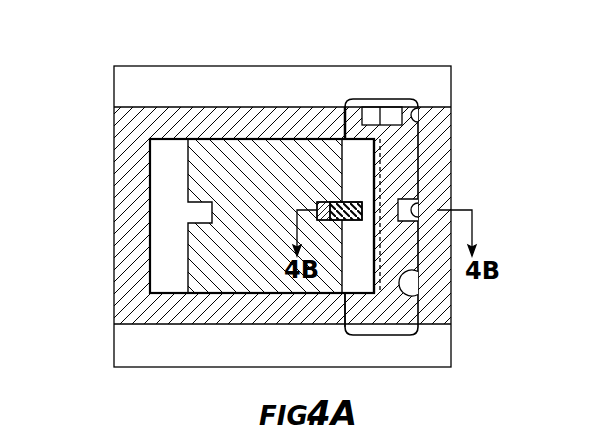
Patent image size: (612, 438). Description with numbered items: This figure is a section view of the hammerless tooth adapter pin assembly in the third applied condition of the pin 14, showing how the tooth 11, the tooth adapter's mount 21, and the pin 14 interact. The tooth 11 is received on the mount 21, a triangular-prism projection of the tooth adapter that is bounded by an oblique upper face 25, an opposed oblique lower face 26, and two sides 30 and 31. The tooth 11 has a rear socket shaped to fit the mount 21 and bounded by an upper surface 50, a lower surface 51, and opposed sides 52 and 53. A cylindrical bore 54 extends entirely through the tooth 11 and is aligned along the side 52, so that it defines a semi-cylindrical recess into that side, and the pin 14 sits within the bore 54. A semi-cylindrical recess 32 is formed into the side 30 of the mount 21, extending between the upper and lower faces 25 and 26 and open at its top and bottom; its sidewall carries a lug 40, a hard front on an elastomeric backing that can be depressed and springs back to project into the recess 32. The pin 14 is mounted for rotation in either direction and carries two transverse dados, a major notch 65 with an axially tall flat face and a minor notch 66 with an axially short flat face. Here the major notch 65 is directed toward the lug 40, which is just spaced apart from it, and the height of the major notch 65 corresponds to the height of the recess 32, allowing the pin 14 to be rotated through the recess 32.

The tooth 11 is at (114, 122).
The pin 14 is at (402, 99).
The mount 21 is at (188, 182).
The oblique upper face 25 is at (197, 140).
The oblique lower face 26 is at (185, 296).
The side 30 is at (350, 296).
The side 31 is at (164, 298).
The recess 32 is at (350, 157).
The lug 40 is at (347, 224).
The upper surface 50 is at (169, 146).
The lower surface 51 is at (218, 294).
The side 52 is at (411, 297).
The side 53 is at (147, 183).
The bore 54 is at (418, 101).
The major notch 65 is at (361, 157).
The minor notch 66 is at (419, 208).